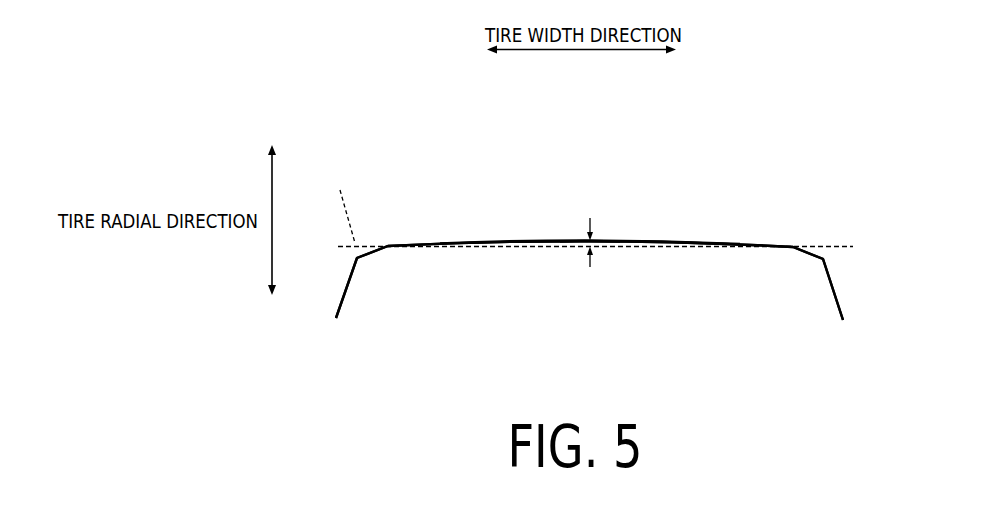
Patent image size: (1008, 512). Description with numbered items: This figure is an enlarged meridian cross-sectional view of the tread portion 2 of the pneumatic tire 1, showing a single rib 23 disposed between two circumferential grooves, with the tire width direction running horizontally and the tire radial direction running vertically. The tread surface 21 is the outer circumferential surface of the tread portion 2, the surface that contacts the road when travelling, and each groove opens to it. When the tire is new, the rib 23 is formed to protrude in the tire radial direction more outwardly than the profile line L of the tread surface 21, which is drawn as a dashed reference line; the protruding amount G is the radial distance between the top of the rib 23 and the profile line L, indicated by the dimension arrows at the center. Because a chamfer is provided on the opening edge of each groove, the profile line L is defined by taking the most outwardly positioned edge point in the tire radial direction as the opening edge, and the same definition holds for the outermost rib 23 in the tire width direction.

The pneumatic tire 1 is at (727, 111).
The tread portion 2 is at (708, 258).
The tread surface 21 is at (523, 236).
The rib 23 is at (622, 267).
The profile line L is at (344, 204).
The protruding amount G is at (587, 246).